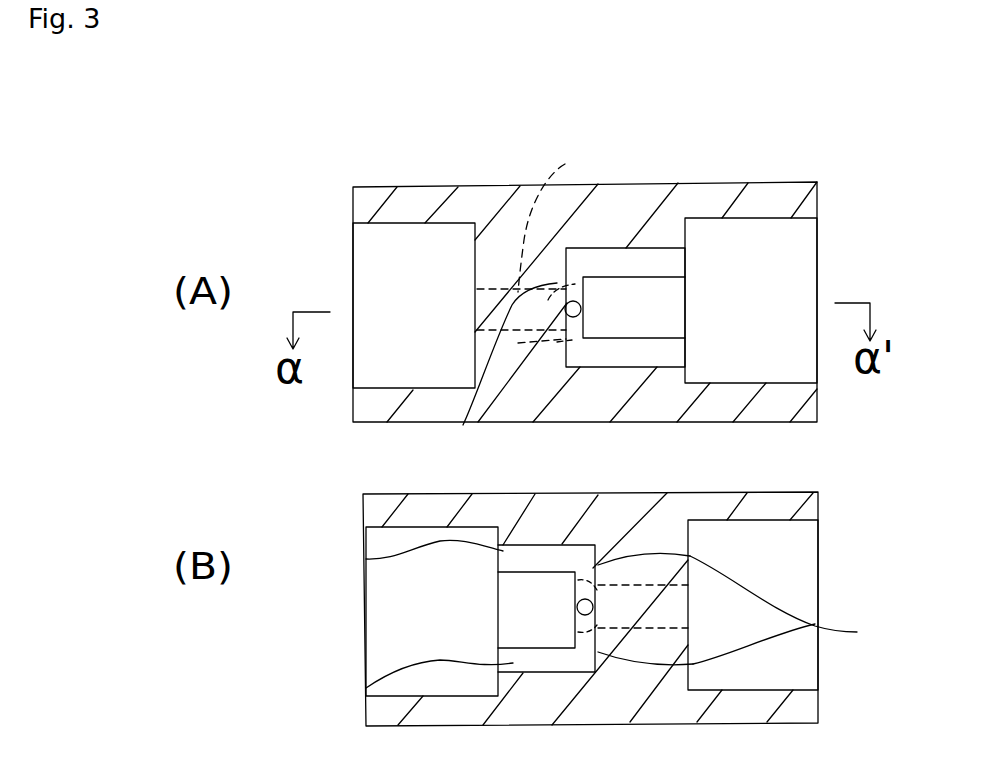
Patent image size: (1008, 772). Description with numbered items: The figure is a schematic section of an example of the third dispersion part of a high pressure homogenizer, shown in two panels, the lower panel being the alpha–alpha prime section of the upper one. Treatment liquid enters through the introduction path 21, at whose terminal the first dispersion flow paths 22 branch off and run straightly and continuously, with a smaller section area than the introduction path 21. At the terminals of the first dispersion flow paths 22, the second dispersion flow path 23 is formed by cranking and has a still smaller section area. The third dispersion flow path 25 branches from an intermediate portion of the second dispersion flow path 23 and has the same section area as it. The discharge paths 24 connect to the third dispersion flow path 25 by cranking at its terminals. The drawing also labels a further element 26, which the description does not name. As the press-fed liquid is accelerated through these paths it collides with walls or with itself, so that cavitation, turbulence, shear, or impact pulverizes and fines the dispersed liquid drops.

The introduction path 21 is at (795, 252).
The first dispersion flow paths 22 is at (610, 258).
The second dispersion flow path 23 is at (473, 423).
The discharge paths 24 is at (366, 559).
The third dispersion flow path 25 is at (583, 303).
The movable block 26 is at (372, 247).